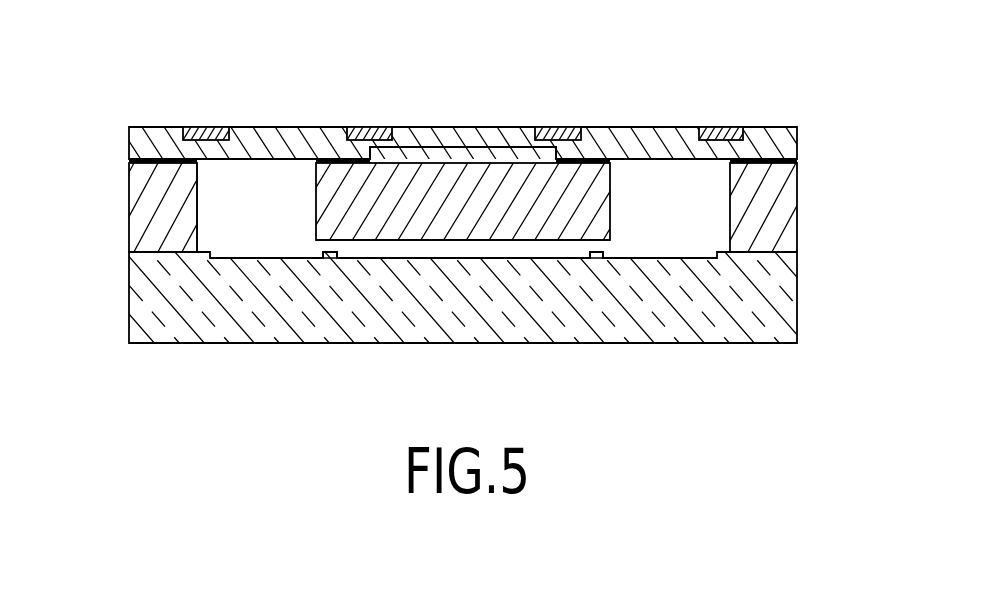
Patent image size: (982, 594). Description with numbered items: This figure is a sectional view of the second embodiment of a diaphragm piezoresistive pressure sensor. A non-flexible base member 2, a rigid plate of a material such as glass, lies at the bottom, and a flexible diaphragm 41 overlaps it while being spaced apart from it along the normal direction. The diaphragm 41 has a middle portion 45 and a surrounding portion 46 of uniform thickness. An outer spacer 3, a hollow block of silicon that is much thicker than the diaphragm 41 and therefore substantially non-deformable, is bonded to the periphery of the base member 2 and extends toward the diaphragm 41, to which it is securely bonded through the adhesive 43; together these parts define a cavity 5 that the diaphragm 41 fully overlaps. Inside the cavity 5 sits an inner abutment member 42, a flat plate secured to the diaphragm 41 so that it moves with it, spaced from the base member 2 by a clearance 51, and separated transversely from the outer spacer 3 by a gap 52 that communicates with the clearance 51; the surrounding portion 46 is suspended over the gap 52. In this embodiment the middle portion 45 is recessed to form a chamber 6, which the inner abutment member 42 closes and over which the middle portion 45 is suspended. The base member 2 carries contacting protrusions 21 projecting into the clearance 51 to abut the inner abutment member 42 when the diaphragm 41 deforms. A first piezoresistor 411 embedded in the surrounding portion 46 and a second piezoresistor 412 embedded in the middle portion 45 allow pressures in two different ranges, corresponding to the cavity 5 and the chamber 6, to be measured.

The base member 2 is at (690, 330).
The contacting protrusions 21 is at (331, 258).
The outer spacer 3 is at (142, 200).
The cavity 5 is at (226, 211).
The clearance 51 is at (498, 238).
The gap 52 is at (265, 208).
The chamber 6 is at (430, 155).
The diaphragm 41 is at (640, 126).
The first piezoresistor 411 is at (203, 135).
The second piezoresistor 412 is at (367, 133).
The inner abutment member 42 is at (612, 207).
The adhesive 43 is at (129, 161).
The middle portion 45 is at (477, 127).
The surrounding portion 46 is at (275, 127).